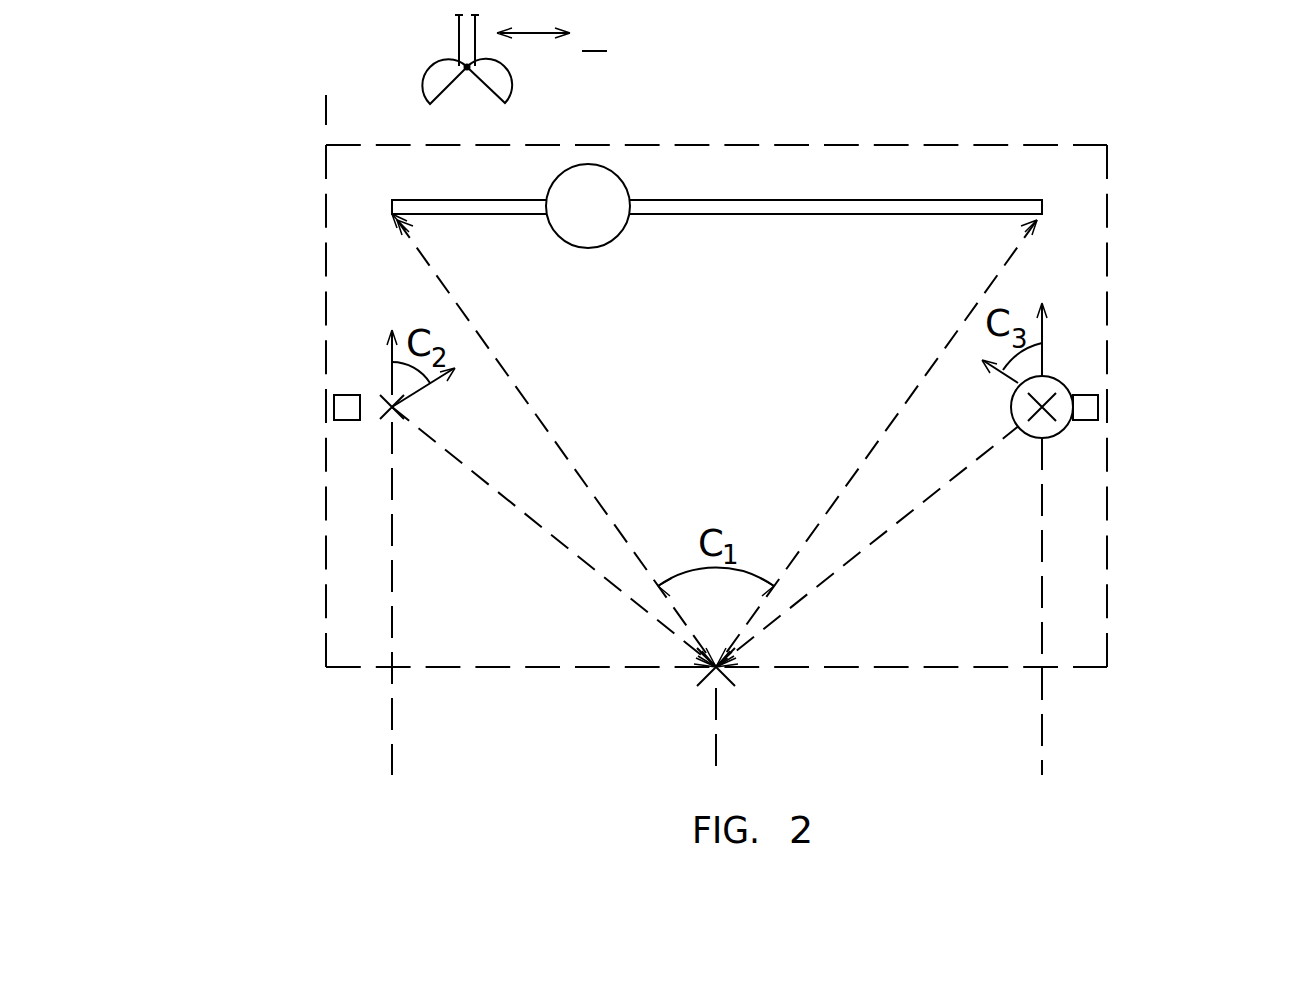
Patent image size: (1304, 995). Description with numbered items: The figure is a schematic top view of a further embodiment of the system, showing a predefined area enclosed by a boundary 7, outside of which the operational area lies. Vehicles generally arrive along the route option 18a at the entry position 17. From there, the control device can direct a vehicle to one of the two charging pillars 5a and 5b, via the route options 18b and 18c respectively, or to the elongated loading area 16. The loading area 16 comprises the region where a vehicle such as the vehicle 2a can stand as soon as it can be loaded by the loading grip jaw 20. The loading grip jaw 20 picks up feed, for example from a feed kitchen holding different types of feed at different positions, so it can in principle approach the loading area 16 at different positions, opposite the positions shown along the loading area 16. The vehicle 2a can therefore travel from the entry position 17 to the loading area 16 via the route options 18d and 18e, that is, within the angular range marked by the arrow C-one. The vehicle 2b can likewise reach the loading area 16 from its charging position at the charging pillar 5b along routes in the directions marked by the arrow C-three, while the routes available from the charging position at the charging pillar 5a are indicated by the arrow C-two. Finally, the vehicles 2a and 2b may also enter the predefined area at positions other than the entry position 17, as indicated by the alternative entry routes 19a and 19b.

The vehicle 2a is at (612, 238).
The vehicle 2b is at (1052, 435).
The charging pillar 5a is at (334, 407).
The charging pillar 5b is at (1098, 407).
The boundary 7 is at (1107, 317).
The loading area 16 is at (1020, 207).
The entry position 17 is at (722, 672).
The route option 18a is at (716, 735).
The route option 18b is at (560, 545).
The route option 18c is at (869, 543).
The route option 18d is at (540, 418).
The route option 18e is at (865, 463).
The alternative entry route 19a is at (392, 720).
The alternative entry route 19b is at (1042, 698).
The loading grip jaw 20 is at (508, 75).